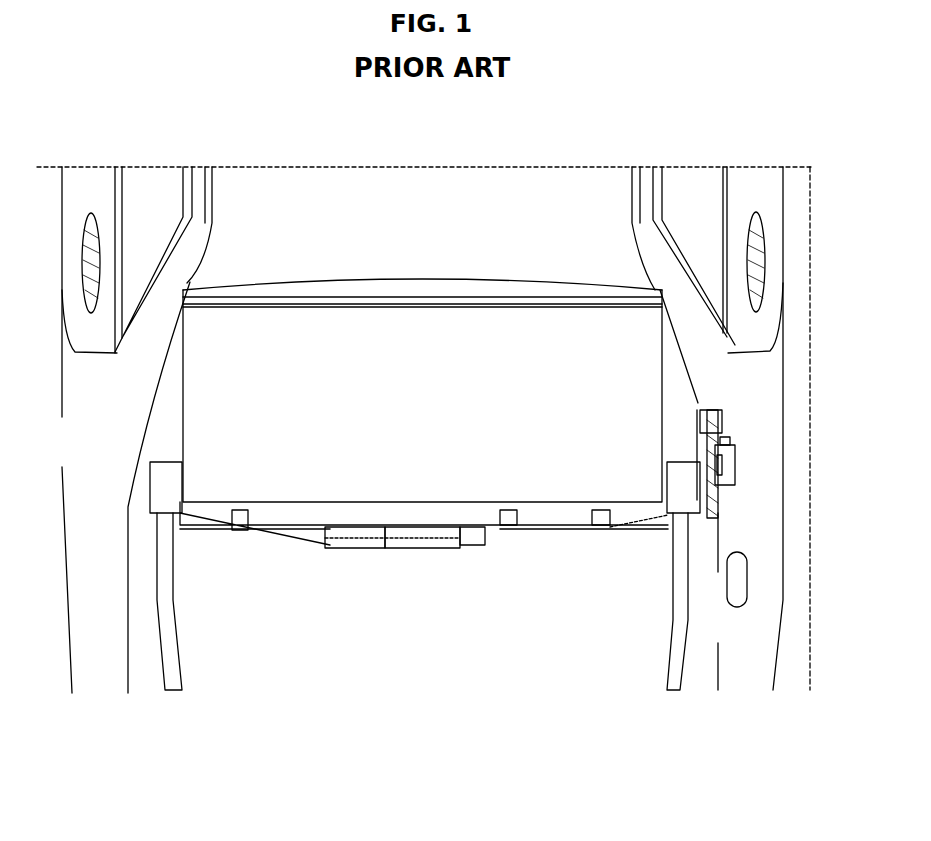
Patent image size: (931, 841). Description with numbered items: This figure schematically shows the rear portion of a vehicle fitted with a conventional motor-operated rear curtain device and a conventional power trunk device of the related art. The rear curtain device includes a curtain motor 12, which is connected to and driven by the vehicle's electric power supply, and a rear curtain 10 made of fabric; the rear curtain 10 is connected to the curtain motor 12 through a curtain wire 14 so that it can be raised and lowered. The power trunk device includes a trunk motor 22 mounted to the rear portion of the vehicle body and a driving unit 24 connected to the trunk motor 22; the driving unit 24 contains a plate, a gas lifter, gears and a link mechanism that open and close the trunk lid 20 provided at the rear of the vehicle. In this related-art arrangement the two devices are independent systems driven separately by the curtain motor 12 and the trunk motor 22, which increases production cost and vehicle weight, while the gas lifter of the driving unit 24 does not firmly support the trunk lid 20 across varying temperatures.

The rear curtain 10 is at (423, 347).
The curtain motor 12 is at (470, 548).
The curtain wire 14 is at (305, 547).
The trunk lid 20 is at (387, 613).
The trunk motor 22 is at (735, 468).
The driving unit 24 is at (723, 420).